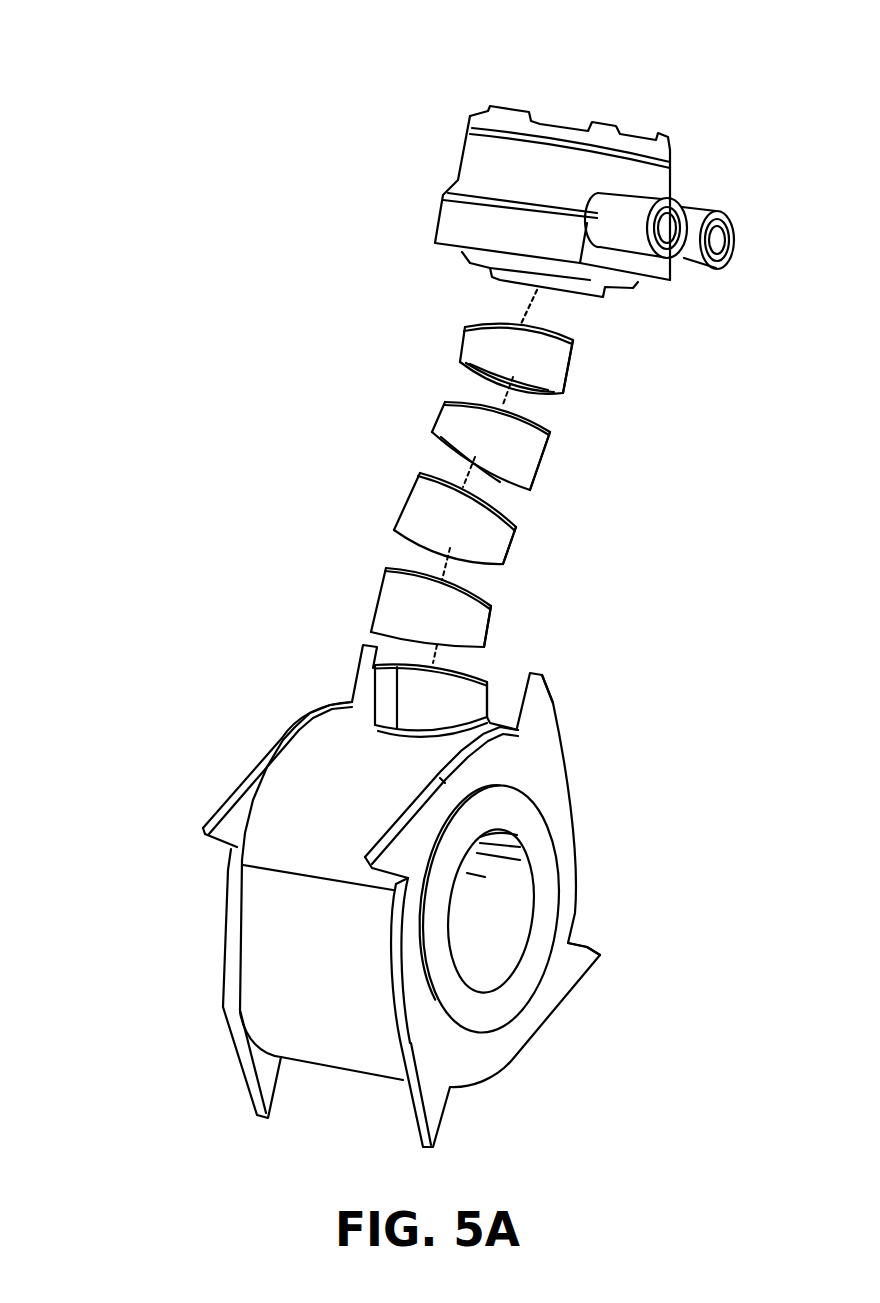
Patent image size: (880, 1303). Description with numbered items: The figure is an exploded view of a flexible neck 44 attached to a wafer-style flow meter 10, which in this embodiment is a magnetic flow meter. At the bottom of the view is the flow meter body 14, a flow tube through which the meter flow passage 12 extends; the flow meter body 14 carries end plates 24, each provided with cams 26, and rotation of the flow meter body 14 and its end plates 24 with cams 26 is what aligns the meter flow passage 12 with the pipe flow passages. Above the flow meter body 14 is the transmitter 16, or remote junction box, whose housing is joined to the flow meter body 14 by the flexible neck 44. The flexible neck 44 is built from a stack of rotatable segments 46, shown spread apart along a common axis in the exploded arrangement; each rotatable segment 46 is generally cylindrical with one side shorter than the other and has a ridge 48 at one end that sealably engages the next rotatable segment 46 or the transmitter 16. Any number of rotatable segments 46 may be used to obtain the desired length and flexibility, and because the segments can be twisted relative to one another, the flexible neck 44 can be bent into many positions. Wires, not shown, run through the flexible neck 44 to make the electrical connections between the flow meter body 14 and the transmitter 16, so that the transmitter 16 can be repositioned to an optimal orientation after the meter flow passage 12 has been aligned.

The flow meter 10 is at (228, 236).
The meter flow passage 12 is at (485, 907).
The flow meter body 14 is at (314, 754).
The transmitter 16 is at (595, 121).
The end plates 24 is at (528, 774).
The cams 26 is at (365, 664).
The flexible neck 44 is at (694, 559).
The rotatable segments 46 is at (576, 376).
The ridges 48 is at (478, 326).